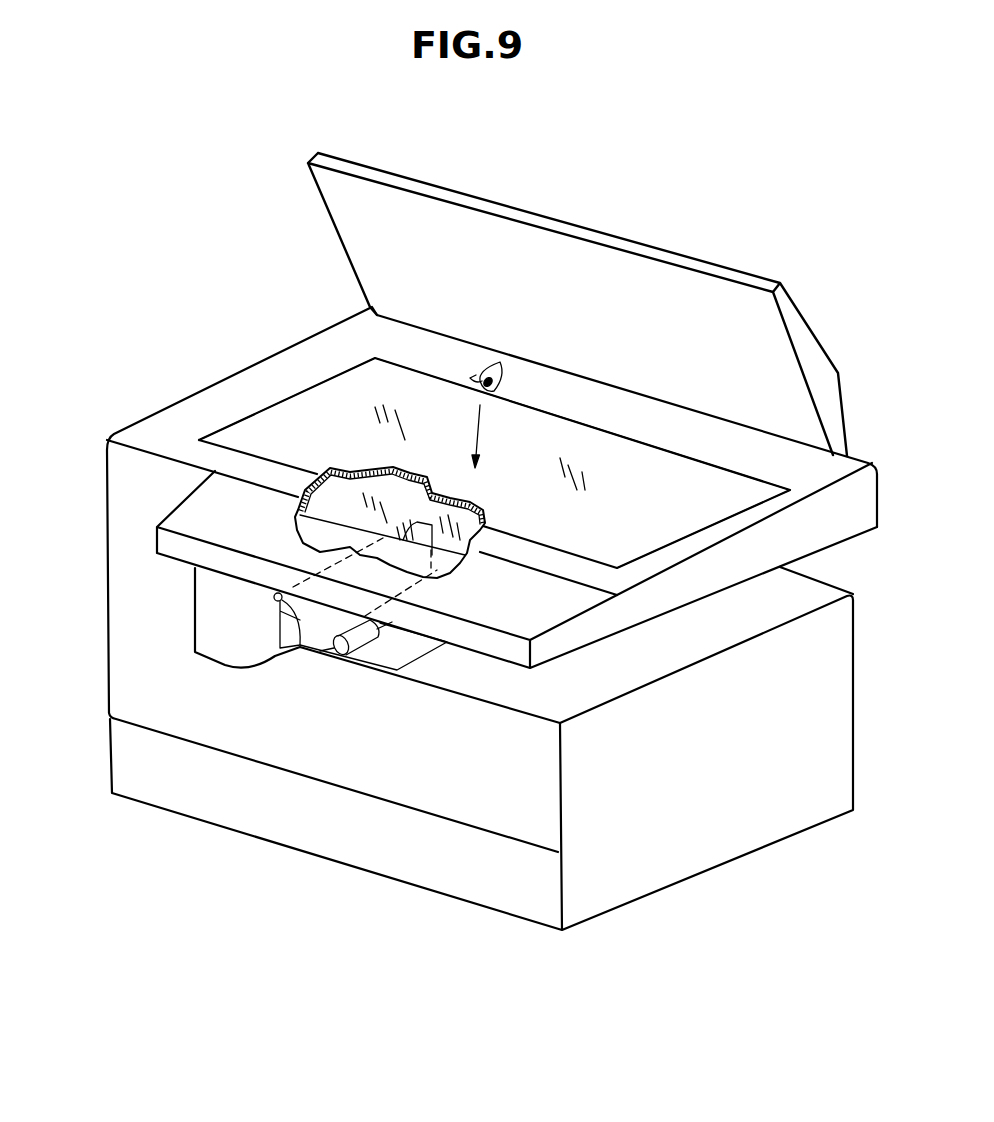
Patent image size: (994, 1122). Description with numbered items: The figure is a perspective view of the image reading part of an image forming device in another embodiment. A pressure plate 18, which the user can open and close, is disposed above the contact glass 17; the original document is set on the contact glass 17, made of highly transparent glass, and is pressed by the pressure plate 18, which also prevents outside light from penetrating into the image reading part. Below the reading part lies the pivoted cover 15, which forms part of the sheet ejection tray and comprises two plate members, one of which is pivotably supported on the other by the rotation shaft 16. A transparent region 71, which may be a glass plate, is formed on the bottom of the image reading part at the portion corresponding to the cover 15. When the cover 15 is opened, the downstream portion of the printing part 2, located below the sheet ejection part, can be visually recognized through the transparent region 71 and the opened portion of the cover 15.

The printing part 2 is at (387, 644).
The cover 15 is at (278, 612).
The rotation shaft 16 is at (274, 598).
The contact glass 17 is at (316, 407).
The pressure plate 18 is at (585, 262).
The transparent region 71 is at (348, 490).